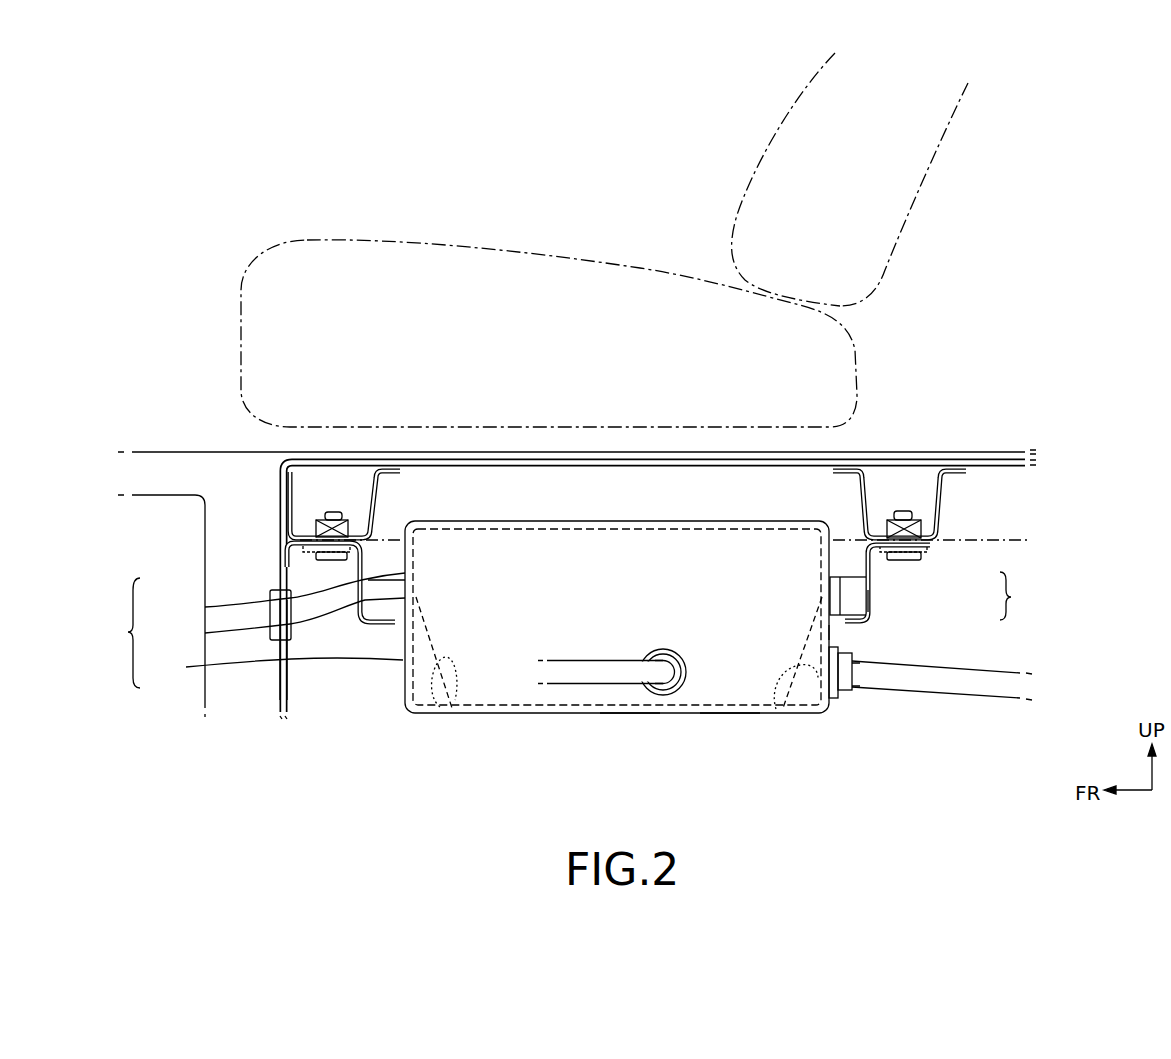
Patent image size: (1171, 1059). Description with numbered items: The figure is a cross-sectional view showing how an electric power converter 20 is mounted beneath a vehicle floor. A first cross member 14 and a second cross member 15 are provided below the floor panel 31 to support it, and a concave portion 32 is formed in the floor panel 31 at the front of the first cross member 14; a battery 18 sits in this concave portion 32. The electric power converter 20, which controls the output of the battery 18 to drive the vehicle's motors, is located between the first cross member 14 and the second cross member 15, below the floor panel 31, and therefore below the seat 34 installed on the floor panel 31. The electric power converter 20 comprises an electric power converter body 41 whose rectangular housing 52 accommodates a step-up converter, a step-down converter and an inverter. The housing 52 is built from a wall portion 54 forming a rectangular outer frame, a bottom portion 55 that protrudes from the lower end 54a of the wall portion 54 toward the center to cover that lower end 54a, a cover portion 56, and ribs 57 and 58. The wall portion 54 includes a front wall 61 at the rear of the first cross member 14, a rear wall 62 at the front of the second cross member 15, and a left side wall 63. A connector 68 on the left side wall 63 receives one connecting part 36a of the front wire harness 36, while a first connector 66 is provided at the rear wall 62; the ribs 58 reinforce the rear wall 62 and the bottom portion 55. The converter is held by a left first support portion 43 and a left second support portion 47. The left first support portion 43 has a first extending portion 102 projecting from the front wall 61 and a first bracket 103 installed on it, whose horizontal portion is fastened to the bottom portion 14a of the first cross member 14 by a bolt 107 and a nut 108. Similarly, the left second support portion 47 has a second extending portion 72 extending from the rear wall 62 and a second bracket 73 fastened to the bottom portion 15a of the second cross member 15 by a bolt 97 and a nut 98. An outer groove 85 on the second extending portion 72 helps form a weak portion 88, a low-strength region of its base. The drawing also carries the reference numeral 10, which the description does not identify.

The vehicle seat structure 10 is at (201, 194).
The first cross member 14 is at (400, 469).
The bottom portion of the first cross member 14a is at (302, 537).
The second cross member 15 is at (975, 469).
The bottom portion of the second cross member 15a is at (930, 534).
The battery 18 is at (166, 494).
The electric power converter 20 is at (558, 460).
The floor panel 31 is at (452, 456).
The concave portion 32 is at (276, 673).
The seat 34 is at (940, 162).
The front wire harness 36 is at (598, 676).
The connecting part of the front wire harness 36a is at (677, 688).
The electric power converter body 41 is at (618, 502).
The left first support portion 43 is at (113, 633).
The left second support portion 47 is at (1046, 596).
The housing 52 is at (680, 505).
The wall portion 54 is at (503, 700).
The lower end of the wall portion 54a is at (730, 698).
The bottom portion 55 is at (628, 715).
The cover portion 56 is at (757, 522).
The ribs 57 is at (436, 709).
The ribs 58 is at (776, 712).
The front wall 61 is at (403, 662).
The rear wall 62 is at (833, 633).
The left side wall 63 is at (517, 557).
The first connector 66 is at (838, 700).
The connector 68 is at (670, 653).
The second extending portion 72 is at (878, 605).
The second bracket 73 is at (878, 576).
The outer groove 85 is at (831, 597).
The weak portion 88 is at (865, 469).
The bolt 97 is at (904, 514).
The nut 98 is at (942, 510).
The first extending portion 102 is at (200, 666).
The first bracket 103 is at (300, 577).
The bolt 107 is at (331, 512).
The nut 108 is at (318, 528).